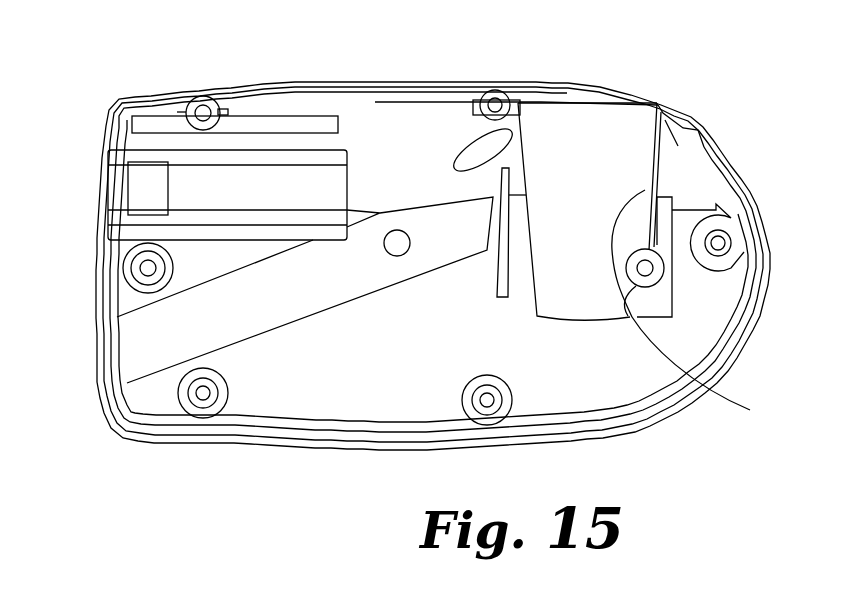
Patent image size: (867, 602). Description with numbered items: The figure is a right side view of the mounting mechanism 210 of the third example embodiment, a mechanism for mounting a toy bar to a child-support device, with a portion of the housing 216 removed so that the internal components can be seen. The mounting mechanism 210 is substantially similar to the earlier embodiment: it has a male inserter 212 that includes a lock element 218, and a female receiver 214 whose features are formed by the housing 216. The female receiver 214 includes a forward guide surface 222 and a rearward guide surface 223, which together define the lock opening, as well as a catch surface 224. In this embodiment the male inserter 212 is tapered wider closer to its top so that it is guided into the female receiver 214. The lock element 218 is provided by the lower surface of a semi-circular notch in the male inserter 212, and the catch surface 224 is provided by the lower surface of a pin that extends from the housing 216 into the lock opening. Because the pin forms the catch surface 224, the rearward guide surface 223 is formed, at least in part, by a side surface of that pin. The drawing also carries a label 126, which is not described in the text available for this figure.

The battery compartment 126 is at (569, 94).
The mounting mechanism 210 is at (646, 67).
The male inserter 212 is at (664, 96).
The female receiver 214 is at (600, 353).
The housing 216 is at (400, 78).
The lock element 218 is at (648, 270).
The forward guide surface 222 is at (525, 296).
The rearward guide surface 223 is at (645, 190).
The catch surface 224 is at (709, 370).